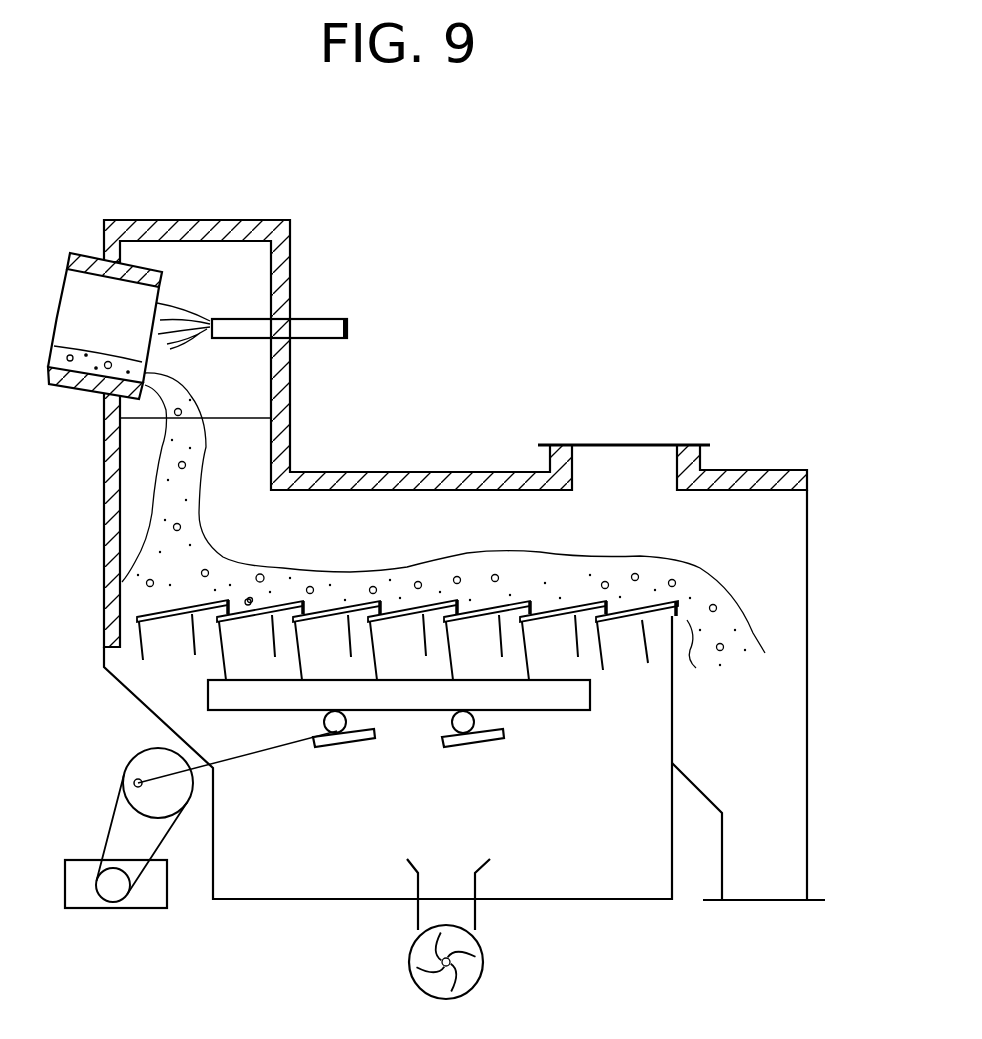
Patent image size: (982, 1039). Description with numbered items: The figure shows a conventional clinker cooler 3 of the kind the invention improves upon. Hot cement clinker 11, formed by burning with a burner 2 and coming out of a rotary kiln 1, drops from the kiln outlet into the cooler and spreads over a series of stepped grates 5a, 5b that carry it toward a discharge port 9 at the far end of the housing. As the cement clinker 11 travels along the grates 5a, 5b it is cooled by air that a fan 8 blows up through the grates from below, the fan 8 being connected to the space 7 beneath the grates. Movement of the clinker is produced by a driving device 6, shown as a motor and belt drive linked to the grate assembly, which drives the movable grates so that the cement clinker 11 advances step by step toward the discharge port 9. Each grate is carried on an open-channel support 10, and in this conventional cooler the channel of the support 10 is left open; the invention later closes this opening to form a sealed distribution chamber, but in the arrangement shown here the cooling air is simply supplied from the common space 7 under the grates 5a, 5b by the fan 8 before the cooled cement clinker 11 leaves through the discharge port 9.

The rotary kiln 1 is at (78, 254).
The burner 2 is at (349, 328).
The clinker cooler 3 is at (457, 472).
The grate 5a is at (405, 605).
The grate 5b is at (511, 605).
The driving device 6 is at (133, 910).
The collection chamber 7 is at (518, 817).
The fan 8 is at (484, 966).
The discharge port 9 is at (808, 665).
The open-channel support 10 is at (647, 645).
The cement clinker 11 is at (263, 574).